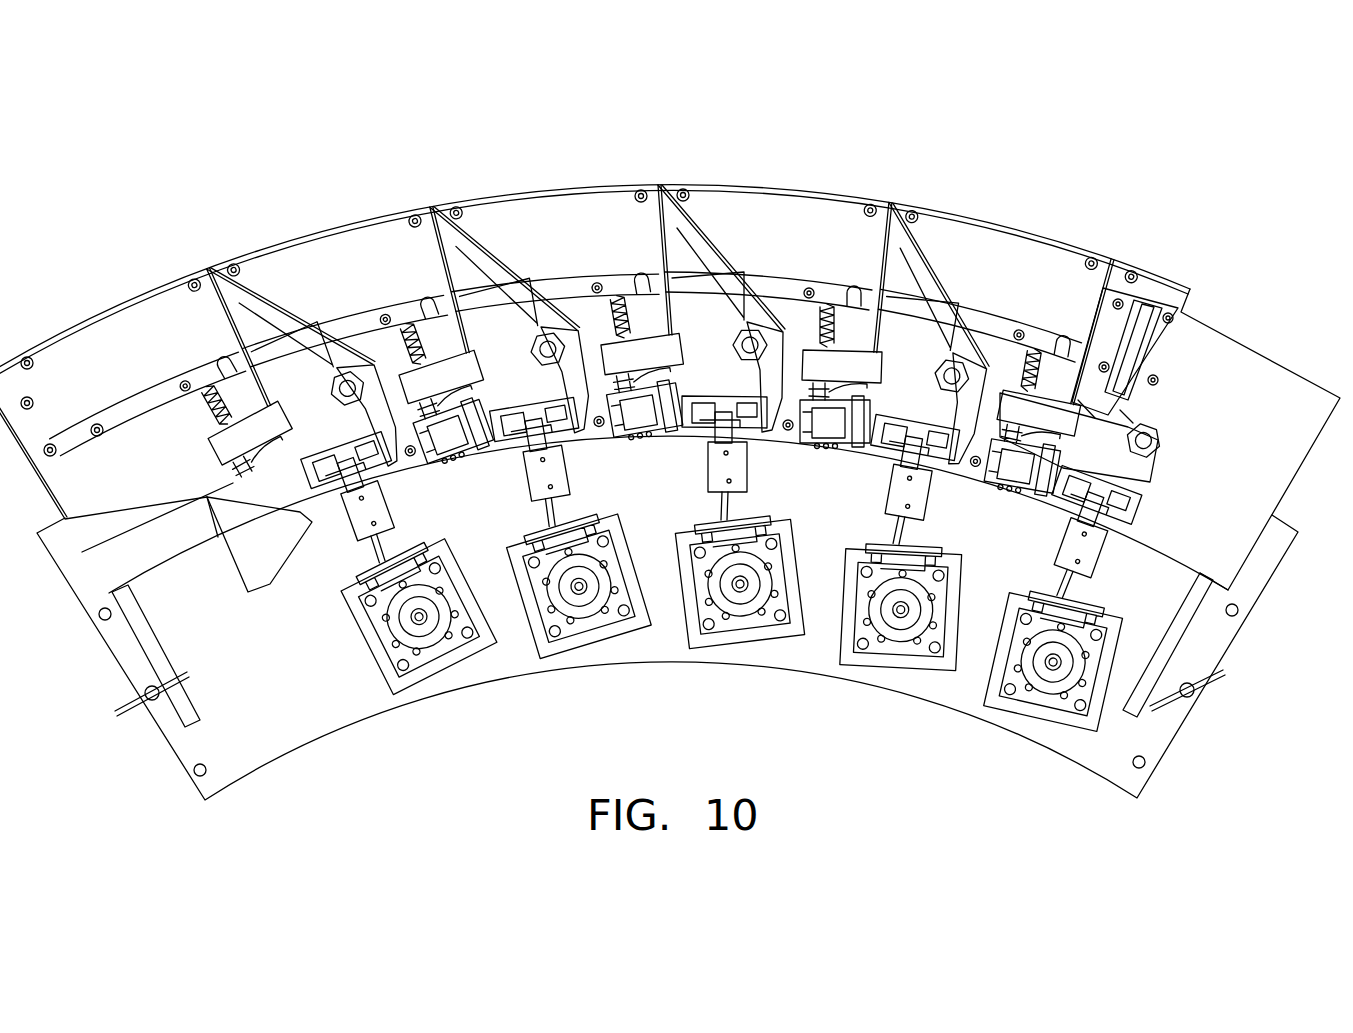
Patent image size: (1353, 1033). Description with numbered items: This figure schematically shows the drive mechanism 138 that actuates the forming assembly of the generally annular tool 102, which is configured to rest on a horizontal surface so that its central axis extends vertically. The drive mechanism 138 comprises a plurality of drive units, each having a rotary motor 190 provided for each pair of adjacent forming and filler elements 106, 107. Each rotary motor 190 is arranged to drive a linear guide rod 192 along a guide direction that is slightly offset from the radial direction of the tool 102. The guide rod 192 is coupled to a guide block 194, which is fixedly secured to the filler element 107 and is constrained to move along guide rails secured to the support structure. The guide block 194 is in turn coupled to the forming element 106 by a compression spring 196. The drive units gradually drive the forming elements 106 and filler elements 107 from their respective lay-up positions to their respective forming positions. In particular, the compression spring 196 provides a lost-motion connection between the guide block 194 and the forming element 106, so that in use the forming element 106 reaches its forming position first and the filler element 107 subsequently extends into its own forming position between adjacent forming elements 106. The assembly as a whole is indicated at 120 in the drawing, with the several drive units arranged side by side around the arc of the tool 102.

The tool 102 is at (295, 736).
The forming element 106 is at (130, 302).
The filler element 107 is at (295, 325).
The tool carriage assembly 120 is at (670, 429).
The drive mechanism 138 is at (670, 429).
The rotary motor 190 is at (458, 628).
The linear guide rod 192 is at (353, 538).
The guide block 194 is at (315, 388).
The compression spring 196 is at (200, 410).